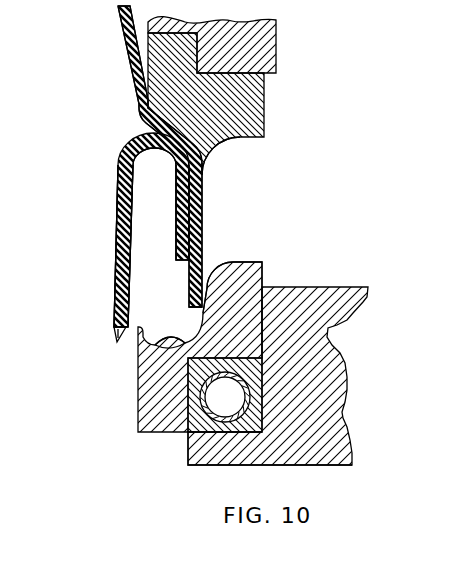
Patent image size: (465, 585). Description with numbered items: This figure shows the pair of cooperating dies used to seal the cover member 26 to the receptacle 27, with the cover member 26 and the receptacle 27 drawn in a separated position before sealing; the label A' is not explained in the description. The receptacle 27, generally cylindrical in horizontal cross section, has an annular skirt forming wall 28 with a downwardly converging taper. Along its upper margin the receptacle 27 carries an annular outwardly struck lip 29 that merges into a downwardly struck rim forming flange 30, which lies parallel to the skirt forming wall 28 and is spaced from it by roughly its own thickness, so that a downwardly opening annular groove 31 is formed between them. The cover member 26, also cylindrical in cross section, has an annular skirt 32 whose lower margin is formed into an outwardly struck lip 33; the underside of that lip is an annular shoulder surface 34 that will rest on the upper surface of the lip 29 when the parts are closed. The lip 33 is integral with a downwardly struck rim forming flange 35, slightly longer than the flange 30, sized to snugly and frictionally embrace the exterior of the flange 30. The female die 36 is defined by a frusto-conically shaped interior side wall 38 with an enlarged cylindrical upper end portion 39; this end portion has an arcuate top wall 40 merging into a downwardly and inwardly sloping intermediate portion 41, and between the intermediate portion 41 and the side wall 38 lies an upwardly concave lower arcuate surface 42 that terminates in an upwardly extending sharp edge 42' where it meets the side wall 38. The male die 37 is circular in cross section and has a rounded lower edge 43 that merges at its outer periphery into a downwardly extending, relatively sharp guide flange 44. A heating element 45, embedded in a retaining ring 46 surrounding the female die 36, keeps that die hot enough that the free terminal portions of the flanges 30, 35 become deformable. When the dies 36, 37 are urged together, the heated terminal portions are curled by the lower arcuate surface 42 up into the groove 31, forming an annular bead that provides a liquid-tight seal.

The cover member 26 is at (125, 50).
The annular skirt 32 is at (134, 75).
The rounded lower edge 43 is at (157, 130).
The rim forming flange 35 is at (202, 215).
The intermediate portion 41 is at (195, 311).
The male die 37 is at (268, 83).
The outwardly struck lip 33 is at (190, 136).
The guide flange 44 is at (203, 171).
The outwardly struck lip 29 is at (147, 133).
The annular groove 31 is at (157, 157).
The rim forming flange 30 is at (176, 188).
The skirt forming wall 28 is at (120, 215).
The receptacle 27 is at (118, 250).
The shoulder surface 34 is at (195, 176).
The sharp edge 42' is at (96, 333).
The lower arcuate surface 42 is at (121, 350).
The interior side wall 38 is at (138, 378).
The arcuate top wall 40 is at (213, 272).
The upper end portion 39 is at (265, 273).
The female die 36 is at (300, 466).
The heating element 45 is at (222, 405).
The retaining ring 46 is at (200, 388).
The direction arrow A' is at (69, 34).